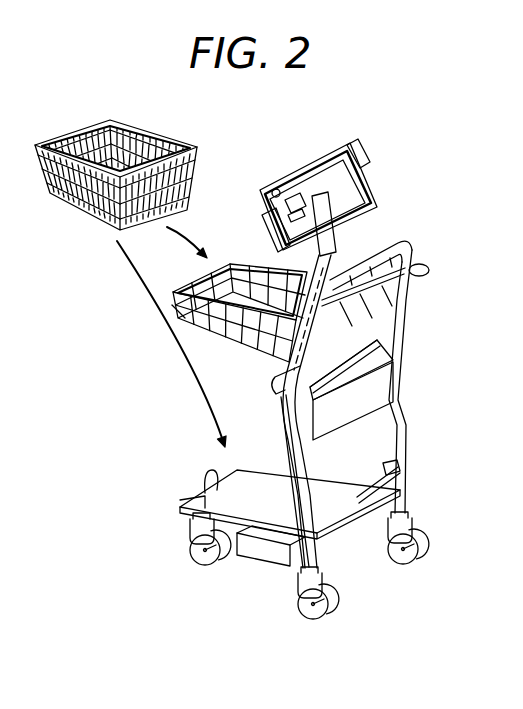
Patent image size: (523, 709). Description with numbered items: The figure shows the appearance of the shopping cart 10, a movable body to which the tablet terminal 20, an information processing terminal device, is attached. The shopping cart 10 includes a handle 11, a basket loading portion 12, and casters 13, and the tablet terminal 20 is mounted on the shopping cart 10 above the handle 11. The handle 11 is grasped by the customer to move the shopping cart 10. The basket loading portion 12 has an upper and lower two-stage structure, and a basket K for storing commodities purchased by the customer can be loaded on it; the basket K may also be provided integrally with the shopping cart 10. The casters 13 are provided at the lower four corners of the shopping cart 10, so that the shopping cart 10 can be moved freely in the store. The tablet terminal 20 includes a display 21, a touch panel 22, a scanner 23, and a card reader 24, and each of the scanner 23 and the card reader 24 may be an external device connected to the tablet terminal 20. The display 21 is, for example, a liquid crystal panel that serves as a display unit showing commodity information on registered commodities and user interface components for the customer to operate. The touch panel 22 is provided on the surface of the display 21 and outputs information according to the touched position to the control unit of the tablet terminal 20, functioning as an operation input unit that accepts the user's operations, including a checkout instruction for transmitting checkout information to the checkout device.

The basket K is at (137, 124).
The shopping cart 10 is at (315, 376).
The handle 11 is at (396, 253).
The basket loading portion 12 is at (229, 262).
The casters 13 is at (325, 617).
The tablet terminal 20 is at (336, 167).
The display 21 is at (373, 197).
The touch panel 22 is at (330, 172).
The scanner 23 is at (305, 187).
The card reader 24 is at (357, 157).